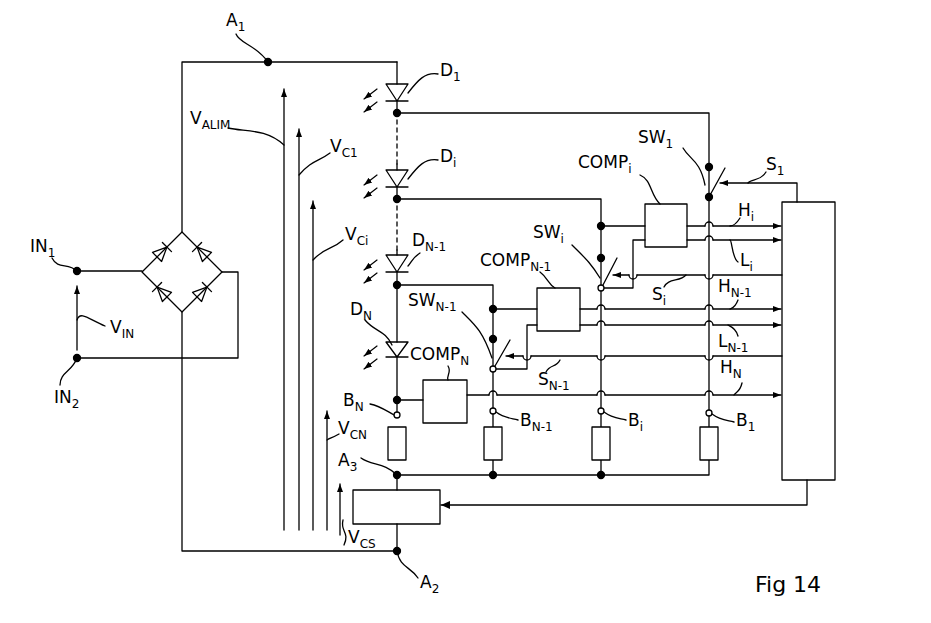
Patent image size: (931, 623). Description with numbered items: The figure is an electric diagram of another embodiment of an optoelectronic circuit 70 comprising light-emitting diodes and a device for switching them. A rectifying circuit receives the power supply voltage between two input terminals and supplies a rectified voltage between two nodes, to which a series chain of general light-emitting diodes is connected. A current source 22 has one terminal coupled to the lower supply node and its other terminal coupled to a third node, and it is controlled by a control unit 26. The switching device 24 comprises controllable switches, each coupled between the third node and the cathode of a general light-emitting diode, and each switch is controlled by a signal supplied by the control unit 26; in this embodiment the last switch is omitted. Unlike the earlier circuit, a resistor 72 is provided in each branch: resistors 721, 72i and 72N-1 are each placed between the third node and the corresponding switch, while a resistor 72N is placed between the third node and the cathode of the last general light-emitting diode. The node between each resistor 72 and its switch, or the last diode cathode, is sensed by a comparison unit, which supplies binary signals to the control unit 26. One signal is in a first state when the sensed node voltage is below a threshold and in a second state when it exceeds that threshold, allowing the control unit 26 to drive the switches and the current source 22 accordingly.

The current source 22 is at (301, 371).
The device for switching general light-emitting diodes 24 is at (162, 247).
The control unit 26 is at (818, 202).
The optoelectronic circuit 70 is at (771, 113).
The resistor 72 is at (576, 447).
The resistor 72N is at (406, 445).
The resistor 72N-1 is at (502, 445).
The resistor 72i is at (610, 445).
The resistor 721 is at (718, 445).